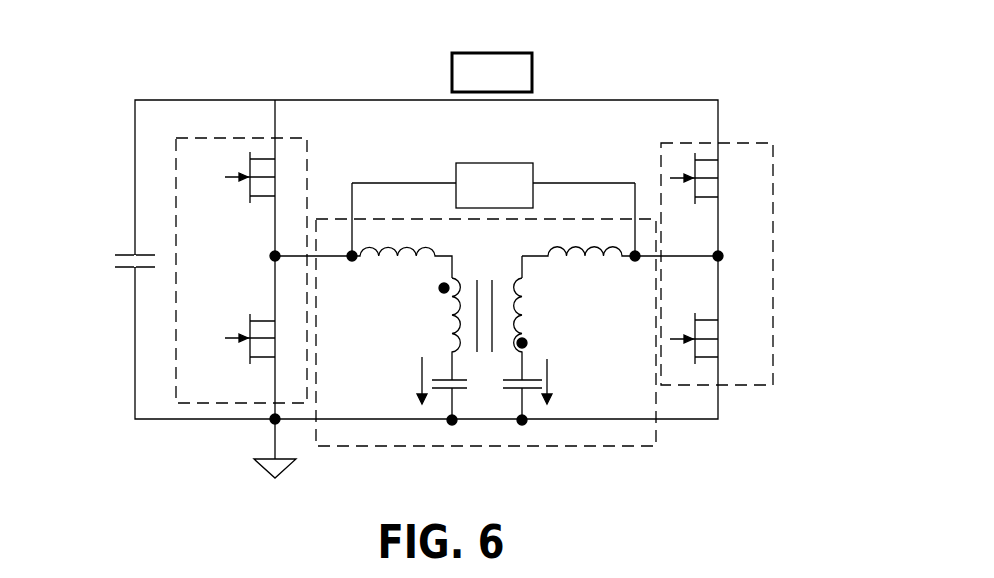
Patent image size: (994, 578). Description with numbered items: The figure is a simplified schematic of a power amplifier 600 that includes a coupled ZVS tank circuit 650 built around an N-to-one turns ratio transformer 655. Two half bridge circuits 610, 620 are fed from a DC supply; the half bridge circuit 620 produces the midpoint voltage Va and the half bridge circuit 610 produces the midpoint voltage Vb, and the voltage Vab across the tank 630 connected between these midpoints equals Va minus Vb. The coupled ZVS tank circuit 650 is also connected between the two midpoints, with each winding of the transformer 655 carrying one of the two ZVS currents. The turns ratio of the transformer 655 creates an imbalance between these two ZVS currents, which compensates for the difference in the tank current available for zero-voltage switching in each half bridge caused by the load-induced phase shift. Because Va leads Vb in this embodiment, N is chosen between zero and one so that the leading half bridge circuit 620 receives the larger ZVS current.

The power amplifier 600 is at (713, 50).
The half bridge circuit 610 is at (773, 177).
The half bridge circuit 620 is at (175, 158).
The tank 630 is at (533, 168).
The coupled ZVS tank circuit 650 is at (577, 446).
The N:1 turns ratio transformer 655 is at (518, 347).